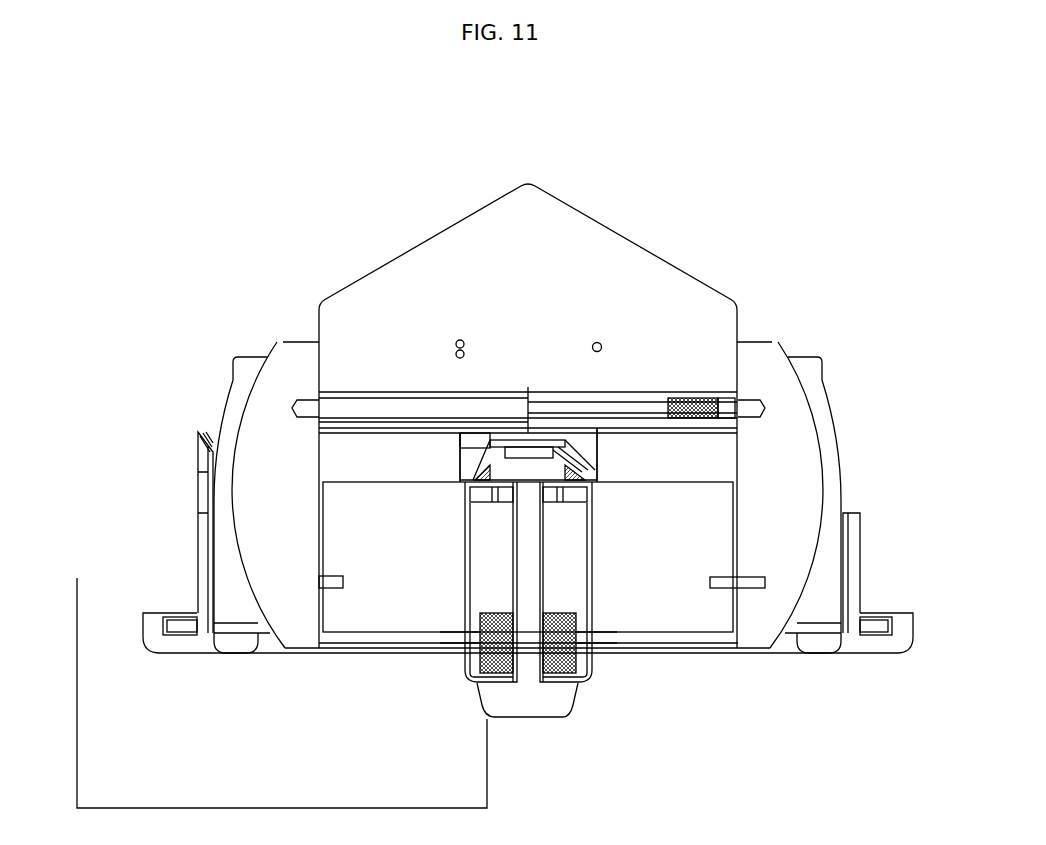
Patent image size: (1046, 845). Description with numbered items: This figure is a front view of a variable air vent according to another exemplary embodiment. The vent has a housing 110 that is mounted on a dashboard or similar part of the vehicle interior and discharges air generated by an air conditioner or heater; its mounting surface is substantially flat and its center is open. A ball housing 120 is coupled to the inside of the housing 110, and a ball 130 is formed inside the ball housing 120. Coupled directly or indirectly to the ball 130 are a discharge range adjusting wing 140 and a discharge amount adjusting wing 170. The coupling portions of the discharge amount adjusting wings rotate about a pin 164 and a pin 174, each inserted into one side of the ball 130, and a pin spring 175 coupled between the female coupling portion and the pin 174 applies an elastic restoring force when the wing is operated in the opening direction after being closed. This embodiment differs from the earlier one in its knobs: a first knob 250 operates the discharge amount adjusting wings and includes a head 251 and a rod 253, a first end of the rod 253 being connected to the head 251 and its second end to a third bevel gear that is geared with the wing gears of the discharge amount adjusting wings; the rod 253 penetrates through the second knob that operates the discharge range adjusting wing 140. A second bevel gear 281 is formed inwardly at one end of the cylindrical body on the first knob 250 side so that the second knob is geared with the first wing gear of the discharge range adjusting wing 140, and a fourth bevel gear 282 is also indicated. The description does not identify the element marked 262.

The housing 110 is at (202, 645).
The ball housing 120 is at (232, 358).
The ball 130 is at (297, 367).
The discharge range adjusting wing 140 is at (682, 605).
The pin 164 is at (292, 407).
The discharge amount adjusting wing 170 is at (600, 253).
The pin 174 is at (765, 410).
The pin spring 175 is at (703, 394).
The first knob 250 is at (282, 705).
The head 251 is at (508, 702).
The rod 253 is at (528, 535).
The socket 262 is at (492, 459).
The second bevel gear 281 is at (588, 567).
The fourth bevel gear 282 is at (547, 680).